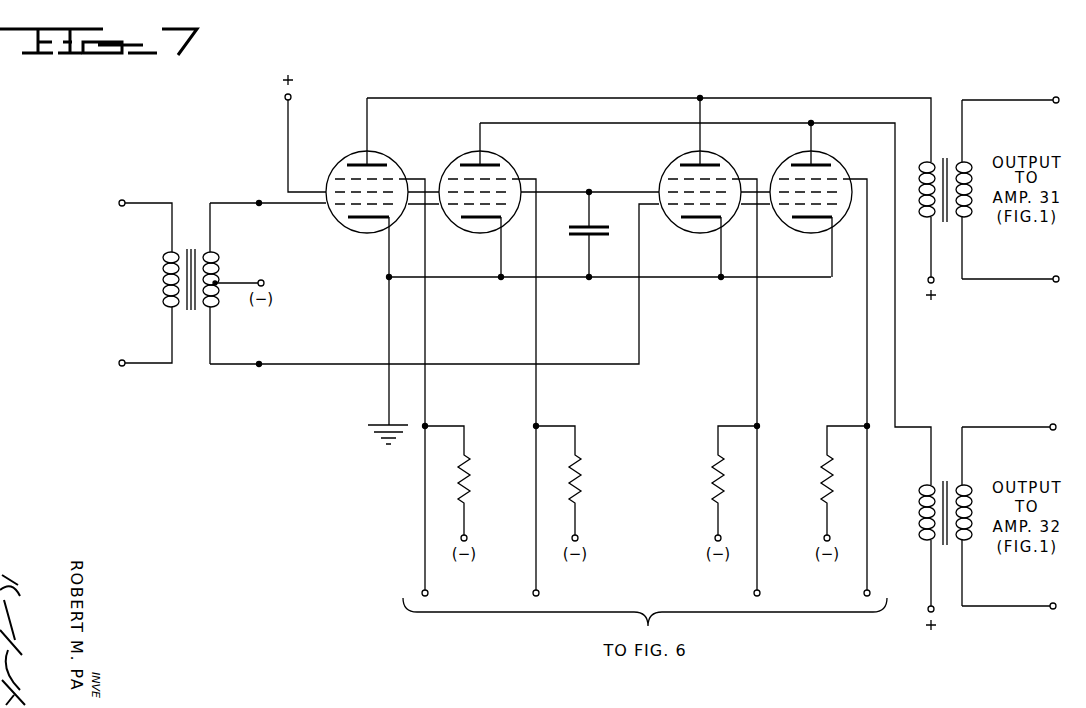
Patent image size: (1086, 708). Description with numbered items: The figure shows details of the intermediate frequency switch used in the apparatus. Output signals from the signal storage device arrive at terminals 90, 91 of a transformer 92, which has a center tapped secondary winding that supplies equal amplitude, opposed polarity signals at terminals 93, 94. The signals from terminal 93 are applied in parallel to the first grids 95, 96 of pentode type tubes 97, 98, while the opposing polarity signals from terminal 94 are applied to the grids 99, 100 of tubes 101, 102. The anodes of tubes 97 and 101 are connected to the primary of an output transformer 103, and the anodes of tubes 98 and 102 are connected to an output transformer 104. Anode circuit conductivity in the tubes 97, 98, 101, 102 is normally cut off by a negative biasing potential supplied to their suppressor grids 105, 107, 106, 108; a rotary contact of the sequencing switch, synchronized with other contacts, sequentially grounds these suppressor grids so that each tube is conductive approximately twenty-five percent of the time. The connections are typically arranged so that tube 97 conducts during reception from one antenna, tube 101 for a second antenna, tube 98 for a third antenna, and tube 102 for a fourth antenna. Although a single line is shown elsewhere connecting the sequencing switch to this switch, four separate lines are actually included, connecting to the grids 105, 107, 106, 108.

The terminal 90 is at (110, 188).
The terminal 91 is at (118, 366).
The transformer 92 is at (173, 192).
The terminal 93 is at (256, 201).
The terminal 94 is at (258, 366).
The first grid 95 is at (337, 213).
The first grid 96 is at (452, 213).
The pentode type tube 97 is at (341, 167).
The pentode type tube 98 is at (454, 167).
The grid 99 is at (669, 215).
The grid 100 is at (780, 215).
The tube 101 is at (667, 168).
The tube 102 is at (781, 168).
The output transformer 103 is at (930, 96).
The output transformer 104 is at (930, 423).
The grid 105 is at (400, 177).
The grid 106 is at (735, 177).
The grid 107 is at (515, 177).
The grid 108 is at (845, 177).